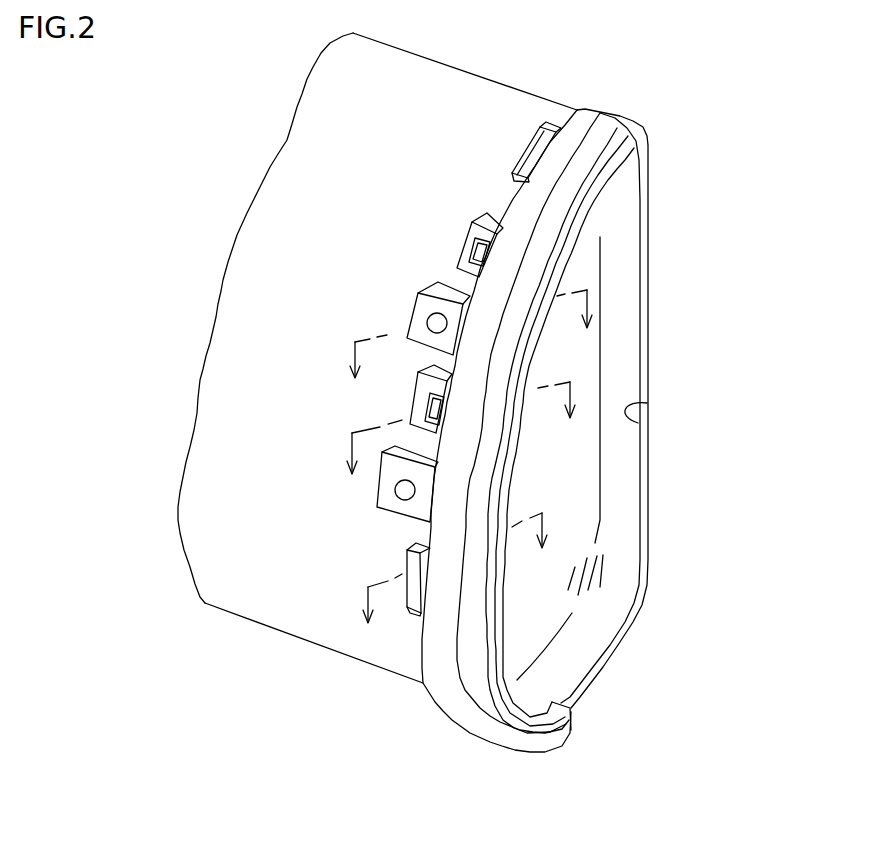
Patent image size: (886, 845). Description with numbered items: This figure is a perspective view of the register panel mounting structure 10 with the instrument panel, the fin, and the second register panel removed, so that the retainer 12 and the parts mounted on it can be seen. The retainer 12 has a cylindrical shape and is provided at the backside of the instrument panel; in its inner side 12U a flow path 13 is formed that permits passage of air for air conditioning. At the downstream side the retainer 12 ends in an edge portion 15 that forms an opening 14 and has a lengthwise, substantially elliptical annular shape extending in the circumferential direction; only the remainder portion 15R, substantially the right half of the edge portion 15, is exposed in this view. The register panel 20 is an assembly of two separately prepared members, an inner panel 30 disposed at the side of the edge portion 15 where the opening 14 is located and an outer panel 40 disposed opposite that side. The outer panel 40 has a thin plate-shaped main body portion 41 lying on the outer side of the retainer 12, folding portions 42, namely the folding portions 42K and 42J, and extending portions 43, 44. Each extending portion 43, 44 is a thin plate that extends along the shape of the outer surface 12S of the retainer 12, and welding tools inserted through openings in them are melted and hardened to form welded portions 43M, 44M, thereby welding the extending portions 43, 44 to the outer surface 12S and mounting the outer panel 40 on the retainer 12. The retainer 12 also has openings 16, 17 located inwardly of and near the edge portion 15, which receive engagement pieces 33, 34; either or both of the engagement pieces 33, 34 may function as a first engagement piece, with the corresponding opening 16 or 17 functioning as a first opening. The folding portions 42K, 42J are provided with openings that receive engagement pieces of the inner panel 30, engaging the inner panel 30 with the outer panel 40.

The register panel mounting structure 10 is at (687, 236).
The retainer 12 is at (336, 358).
The outer surface 12S is at (377, 358).
The flow path 13 is at (618, 306).
The inner side 12U is at (571, 415).
The opening 14 is at (648, 403).
The edge portion 15 is at (686, 408).
The remainder portion 15R is at (609, 408).
The register panel 20 is at (702, 443).
The inner panel 30 is at (602, 431).
The outer panel 40 is at (597, 430).
The engagement piece 33 is at (321, 220).
The opening 16 is at (480, 245).
The engagement piece 34 is at (437, 408).
The opening 17 is at (431, 399).
The main body portion 41 is at (435, 431).
The folding portions 42 is at (418, 567).
The folding portion 42K is at (536, 152).
The folding portion 42J is at (418, 579).
The extending portion 43 is at (284, 317).
The welded portion 43M is at (272, 306).
The extending portion 44 is at (417, 512).
The welded portion 44M is at (403, 490).